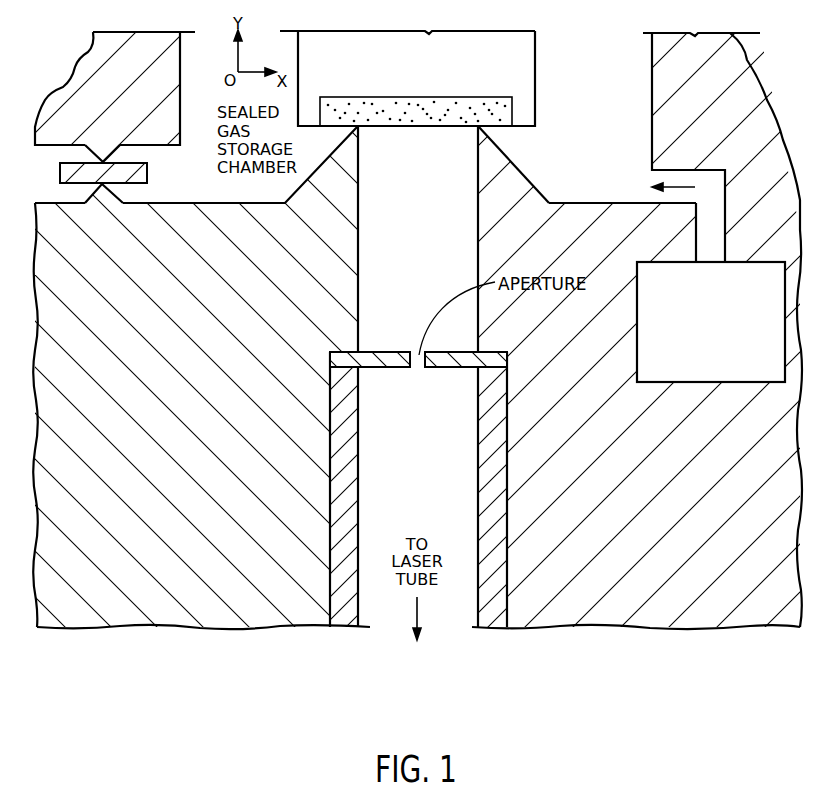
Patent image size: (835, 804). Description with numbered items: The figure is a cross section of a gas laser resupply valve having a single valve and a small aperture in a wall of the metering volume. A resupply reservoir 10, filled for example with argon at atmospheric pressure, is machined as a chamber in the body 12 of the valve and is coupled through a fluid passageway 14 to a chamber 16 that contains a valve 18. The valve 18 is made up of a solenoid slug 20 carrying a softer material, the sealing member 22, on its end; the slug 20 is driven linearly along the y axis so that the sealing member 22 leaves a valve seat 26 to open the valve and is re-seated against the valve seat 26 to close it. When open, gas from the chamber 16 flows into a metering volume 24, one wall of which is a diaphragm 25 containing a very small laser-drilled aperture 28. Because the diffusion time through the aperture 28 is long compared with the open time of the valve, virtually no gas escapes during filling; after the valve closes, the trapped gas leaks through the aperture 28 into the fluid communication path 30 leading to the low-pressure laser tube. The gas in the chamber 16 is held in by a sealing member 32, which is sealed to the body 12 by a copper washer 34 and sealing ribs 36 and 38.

The resupply reservoir 10 is at (713, 376).
The body 12 is at (693, 620).
The fluid passageway 14 is at (722, 219).
The chamber 16 is at (573, 189).
The valve 18 is at (550, 43).
The solenoid slug 20 is at (537, 68).
The sealing member 22 is at (502, 122).
The metering volume 24 is at (405, 294).
The diaphragm 25 is at (371, 352).
The valve seat 26 is at (477, 127).
The aperture 28 is at (417, 366).
The fluid communication path 30 is at (425, 476).
The sealing member 32 is at (167, 64).
The copper washer 34 is at (148, 174).
The sealing rib 36 is at (118, 194).
The sealing rib 38 is at (115, 151).